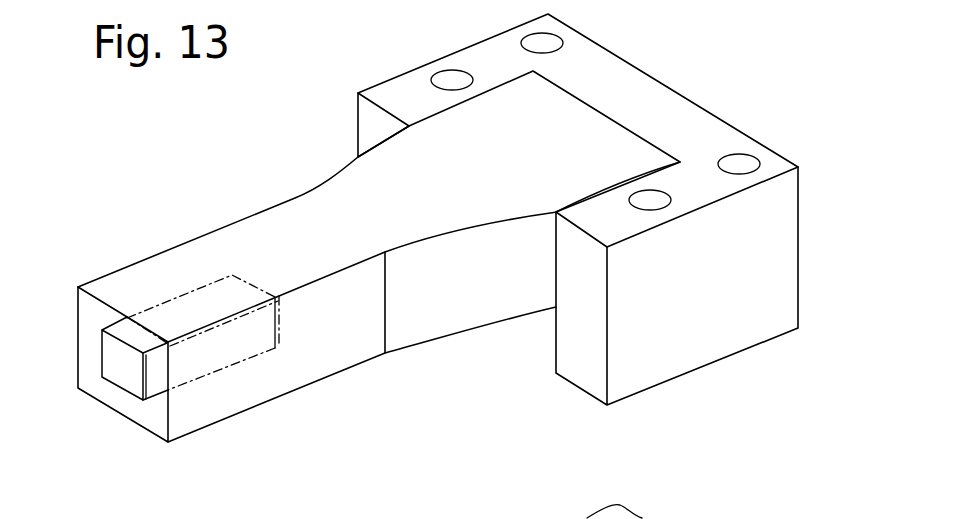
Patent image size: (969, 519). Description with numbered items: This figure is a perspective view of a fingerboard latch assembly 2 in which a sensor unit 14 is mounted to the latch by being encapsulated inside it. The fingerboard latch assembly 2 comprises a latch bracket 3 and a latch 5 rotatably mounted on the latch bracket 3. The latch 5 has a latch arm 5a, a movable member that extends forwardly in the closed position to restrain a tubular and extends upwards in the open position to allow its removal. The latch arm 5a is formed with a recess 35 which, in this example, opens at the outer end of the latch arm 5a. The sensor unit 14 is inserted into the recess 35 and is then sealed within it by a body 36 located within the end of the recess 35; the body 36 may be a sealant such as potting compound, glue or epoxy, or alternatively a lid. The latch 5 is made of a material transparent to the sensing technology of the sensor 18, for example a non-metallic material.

The fingerboard latch assembly 2 is at (416, 50).
The latch bracket 3 is at (648, 112).
The latch 5 is at (275, 240).
The latch arm 5a is at (355, 348).
The sensor unit 14 is at (227, 348).
The sensor 18 is at (188, 365).
The recess 35 is at (287, 340).
The body 36 is at (118, 370).